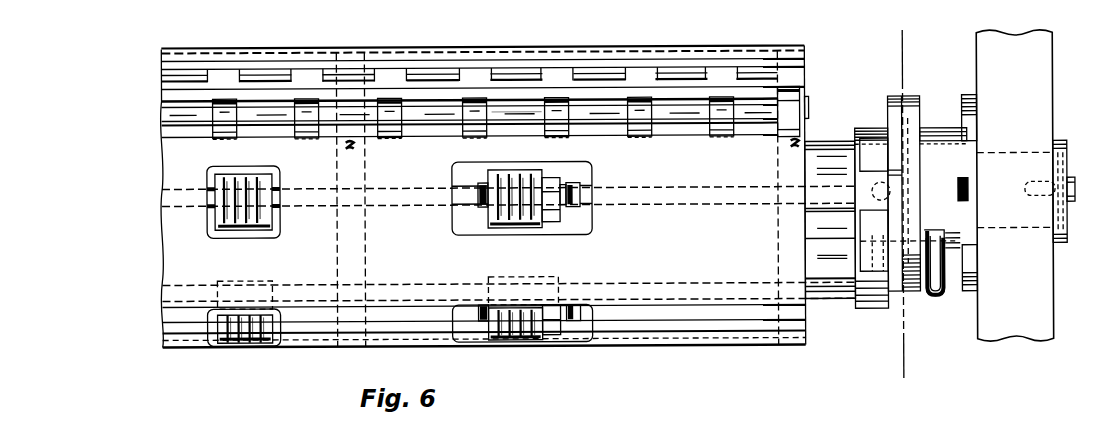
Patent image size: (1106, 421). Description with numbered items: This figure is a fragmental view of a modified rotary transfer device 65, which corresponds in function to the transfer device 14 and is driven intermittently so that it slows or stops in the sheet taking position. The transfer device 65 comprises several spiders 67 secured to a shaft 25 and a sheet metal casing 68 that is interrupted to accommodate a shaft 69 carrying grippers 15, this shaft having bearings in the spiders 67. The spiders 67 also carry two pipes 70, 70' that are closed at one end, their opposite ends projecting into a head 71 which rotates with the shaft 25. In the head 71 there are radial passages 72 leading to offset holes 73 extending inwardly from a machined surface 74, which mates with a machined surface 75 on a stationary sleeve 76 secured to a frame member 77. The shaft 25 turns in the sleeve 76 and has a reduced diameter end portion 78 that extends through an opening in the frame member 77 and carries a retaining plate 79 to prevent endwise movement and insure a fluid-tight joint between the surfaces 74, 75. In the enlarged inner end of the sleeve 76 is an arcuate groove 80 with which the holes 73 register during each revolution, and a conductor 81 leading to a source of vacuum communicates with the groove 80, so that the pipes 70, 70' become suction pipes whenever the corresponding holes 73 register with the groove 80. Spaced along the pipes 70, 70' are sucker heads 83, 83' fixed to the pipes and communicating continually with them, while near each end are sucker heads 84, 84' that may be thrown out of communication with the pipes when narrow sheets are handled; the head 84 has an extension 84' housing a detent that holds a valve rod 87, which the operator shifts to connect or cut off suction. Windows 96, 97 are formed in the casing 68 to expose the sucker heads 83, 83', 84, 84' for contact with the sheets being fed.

The transfer device 65 is at (158, 256).
The grippers 15 is at (393, 122).
The transfer device 14 is at (905, 55).
The shaft 69 is at (608, 110).
The spiders 67 is at (806, 98).
The sheet metal casing 68 is at (707, 320).
The sucker heads 83' is at (262, 196).
The sucker heads 83 is at (254, 304).
The sucker heads / extension 84' is at (522, 188).
The sucker heads 84 is at (522, 299).
The windows 96 is at (281, 222).
The windows 97 is at (451, 228).
The valve rod 87 is at (584, 200).
The shaft 25 is at (838, 132).
The pipe 70' is at (832, 170).
The pipe 70 is at (833, 285).
The radial passages 72 is at (858, 211).
The head 71 is at (878, 118).
The offset holes 73 is at (905, 198).
The arcuate groove 80 is at (910, 190).
The machined surface 75 is at (917, 101).
The stationary sleeve 76 is at (954, 131).
The machined surface 74 is at (907, 298).
The conductor 81 is at (946, 287).
The frame member 77 is at (1053, 275).
The reduced diameter end portion 78 is at (1026, 230).
The retaining plate 79 is at (1068, 234).